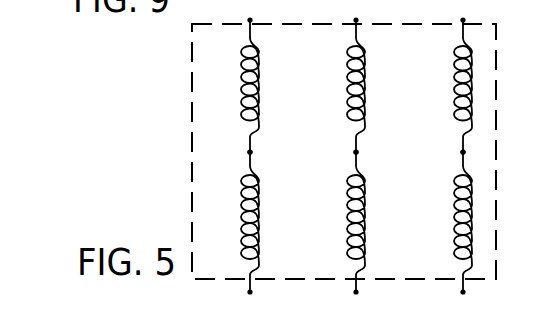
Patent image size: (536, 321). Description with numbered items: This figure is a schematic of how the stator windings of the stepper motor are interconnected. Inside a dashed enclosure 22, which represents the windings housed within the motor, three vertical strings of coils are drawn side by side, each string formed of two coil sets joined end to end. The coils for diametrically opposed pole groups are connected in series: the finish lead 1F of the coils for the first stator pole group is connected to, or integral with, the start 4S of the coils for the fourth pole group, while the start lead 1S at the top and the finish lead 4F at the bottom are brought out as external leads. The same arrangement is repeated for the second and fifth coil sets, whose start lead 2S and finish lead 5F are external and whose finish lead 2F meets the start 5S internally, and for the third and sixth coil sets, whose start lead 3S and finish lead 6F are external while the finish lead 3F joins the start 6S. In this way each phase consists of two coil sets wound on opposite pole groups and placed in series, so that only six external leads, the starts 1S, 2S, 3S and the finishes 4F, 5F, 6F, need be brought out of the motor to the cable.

The stator winding assembly (dashed enclosure) 22 is at (207, 112).
The start lead 1S is at (250, 76).
The finish lead 1F is at (239, 145).
The start lead 2S is at (355, 76).
The finish lead 2F is at (345, 145).
The start lead 3S is at (462, 76).
The finish lead 3F is at (452, 145).
The start lead 4S is at (242, 220).
The finish lead 4F is at (249, 304).
The start lead 5S is at (348, 220).
The finish lead 5F is at (356, 304).
The start lead 6S is at (455, 220).
The finish lead 6F is at (462, 304).